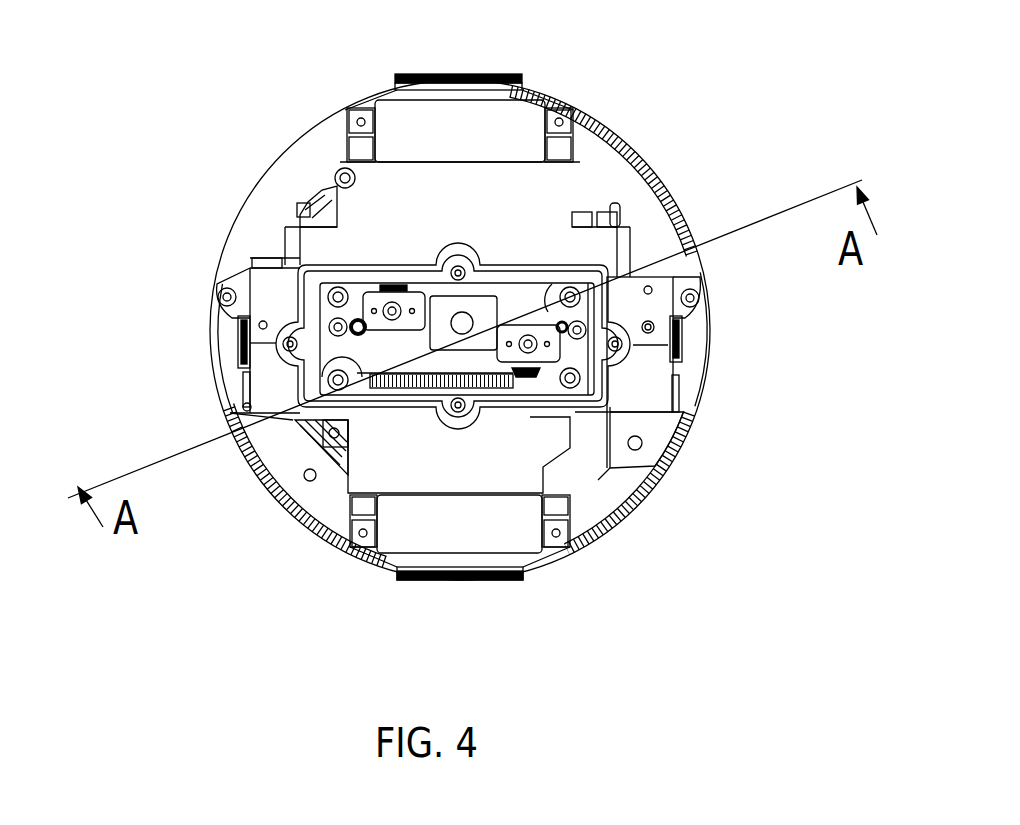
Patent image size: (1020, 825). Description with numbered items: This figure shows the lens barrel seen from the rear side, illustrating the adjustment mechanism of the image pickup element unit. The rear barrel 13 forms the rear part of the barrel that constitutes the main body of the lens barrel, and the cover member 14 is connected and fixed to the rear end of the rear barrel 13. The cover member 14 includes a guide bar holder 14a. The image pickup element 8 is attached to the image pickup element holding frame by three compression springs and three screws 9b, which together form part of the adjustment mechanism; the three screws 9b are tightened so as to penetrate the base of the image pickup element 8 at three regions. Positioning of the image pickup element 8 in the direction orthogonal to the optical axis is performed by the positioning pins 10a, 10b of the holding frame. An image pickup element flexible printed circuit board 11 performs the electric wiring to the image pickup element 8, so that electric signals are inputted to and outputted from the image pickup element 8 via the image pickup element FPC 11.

The image pickup element 8 is at (464, 312).
The screws 9b is at (338, 287).
The positioning pin 10a is at (348, 323).
The positioning pin 10b is at (565, 322).
The image pickup element flexible printed circuit board 11 is at (439, 122).
The rear barrel 13 is at (610, 167).
The cover member 14 is at (452, 462).
The guide bar holder 14a is at (598, 397).